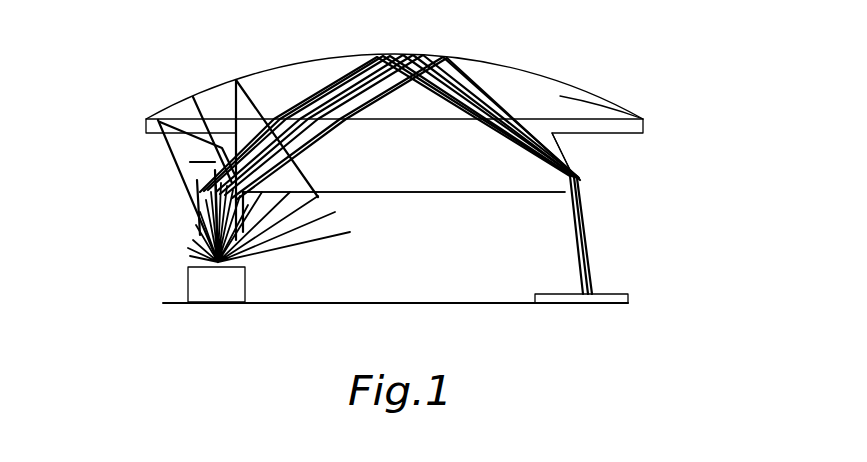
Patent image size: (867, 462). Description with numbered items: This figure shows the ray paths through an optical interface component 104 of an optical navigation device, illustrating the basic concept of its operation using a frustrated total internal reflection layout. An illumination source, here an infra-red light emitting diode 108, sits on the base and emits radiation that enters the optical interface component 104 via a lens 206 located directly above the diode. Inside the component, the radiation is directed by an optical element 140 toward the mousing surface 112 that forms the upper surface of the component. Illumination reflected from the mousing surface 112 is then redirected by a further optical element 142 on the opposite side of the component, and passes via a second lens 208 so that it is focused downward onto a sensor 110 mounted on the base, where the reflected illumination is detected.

The optical interface component 104 is at (278, 88).
The mousing surface 112 is at (627, 113).
The further optical element 142 is at (567, 165).
The lens 208 is at (572, 192).
The optical element 140 is at (185, 178).
The lens 206 is at (207, 232).
The infra-red light emitting diode 108 is at (188, 283).
The sensor 110 is at (628, 298).